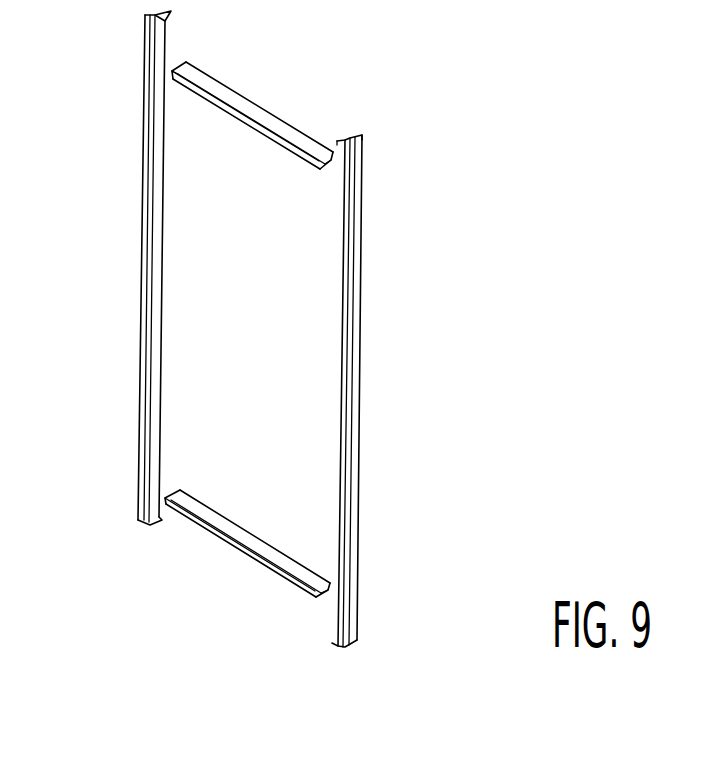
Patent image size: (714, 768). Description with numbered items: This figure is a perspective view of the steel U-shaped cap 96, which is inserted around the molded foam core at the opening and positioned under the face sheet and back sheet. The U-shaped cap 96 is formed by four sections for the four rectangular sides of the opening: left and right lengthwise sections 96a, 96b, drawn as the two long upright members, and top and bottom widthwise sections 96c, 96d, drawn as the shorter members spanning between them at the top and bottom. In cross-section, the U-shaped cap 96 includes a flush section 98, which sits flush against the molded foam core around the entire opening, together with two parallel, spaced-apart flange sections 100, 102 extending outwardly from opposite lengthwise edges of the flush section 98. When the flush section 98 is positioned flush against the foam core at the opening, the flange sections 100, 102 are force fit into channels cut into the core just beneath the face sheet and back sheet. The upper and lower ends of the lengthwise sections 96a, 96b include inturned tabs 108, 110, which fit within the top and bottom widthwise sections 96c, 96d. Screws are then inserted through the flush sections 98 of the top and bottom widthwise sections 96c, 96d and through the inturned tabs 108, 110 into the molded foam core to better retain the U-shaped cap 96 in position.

The U-shaped cap 96 is at (170, 555).
The left lengthwise section 96a is at (163, 313).
The right lengthwise section 96b is at (360, 367).
The top widthwise section 96c is at (244, 98).
The bottom widthwise section 96d is at (248, 553).
The flush section 98 is at (152, 162).
The flange section 100 is at (362, 223).
The flange section 102 is at (343, 233).
The inturned tab 108 is at (343, 137).
The inturned tab 110 is at (335, 641).